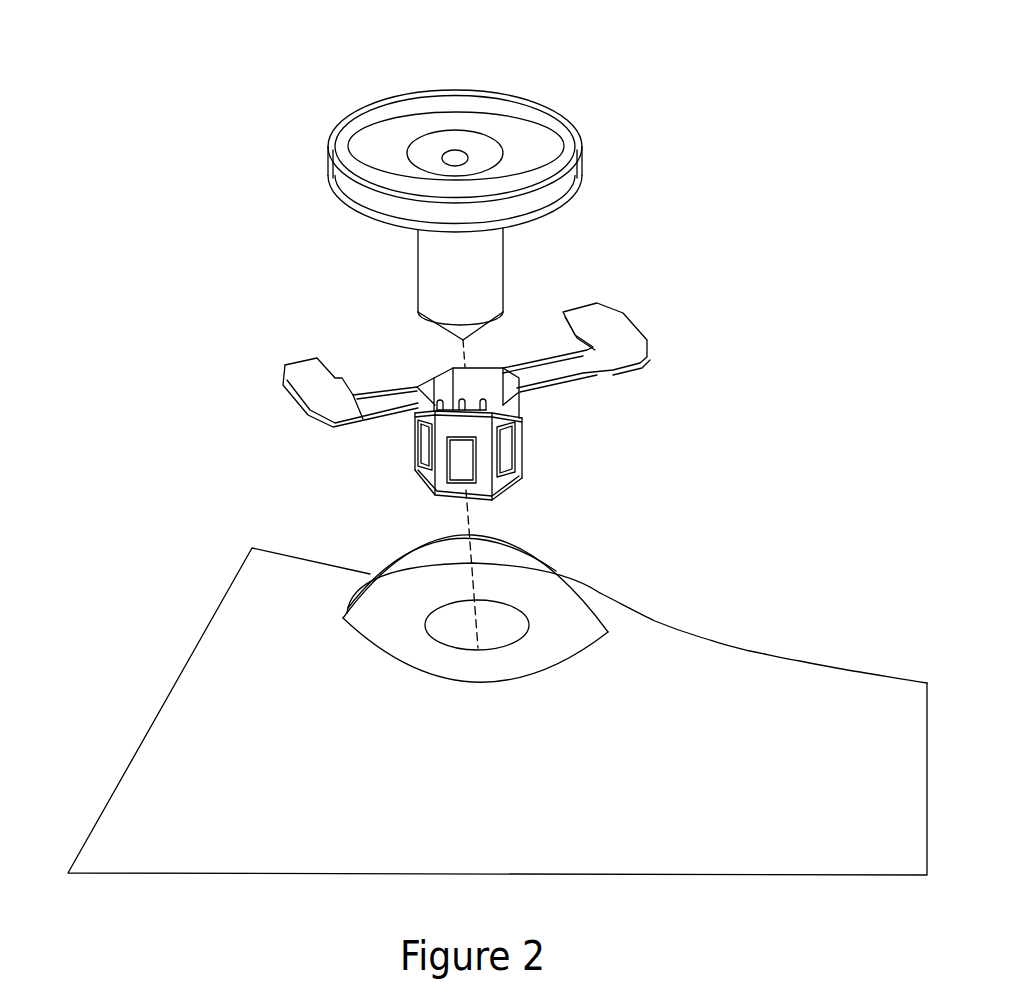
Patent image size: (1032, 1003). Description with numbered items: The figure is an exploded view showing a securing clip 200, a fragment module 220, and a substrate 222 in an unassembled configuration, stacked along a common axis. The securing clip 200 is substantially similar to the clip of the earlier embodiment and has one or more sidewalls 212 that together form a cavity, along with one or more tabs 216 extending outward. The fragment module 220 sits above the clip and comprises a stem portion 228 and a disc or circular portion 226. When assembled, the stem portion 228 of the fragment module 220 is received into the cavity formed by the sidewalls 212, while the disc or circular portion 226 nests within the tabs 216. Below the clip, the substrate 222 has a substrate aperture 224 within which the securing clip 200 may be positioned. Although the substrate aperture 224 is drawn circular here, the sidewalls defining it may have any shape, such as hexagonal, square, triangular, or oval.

The securing clip 200 is at (137, 62).
The fragment module 220 is at (330, 175).
The disc or circular portion 226 is at (580, 157).
The stem portion 228 is at (503, 253).
The tabs 216 is at (615, 372).
The sidewalls 212 is at (507, 418).
The substrate 222 is at (208, 720).
The substrate aperture 224 is at (503, 615).